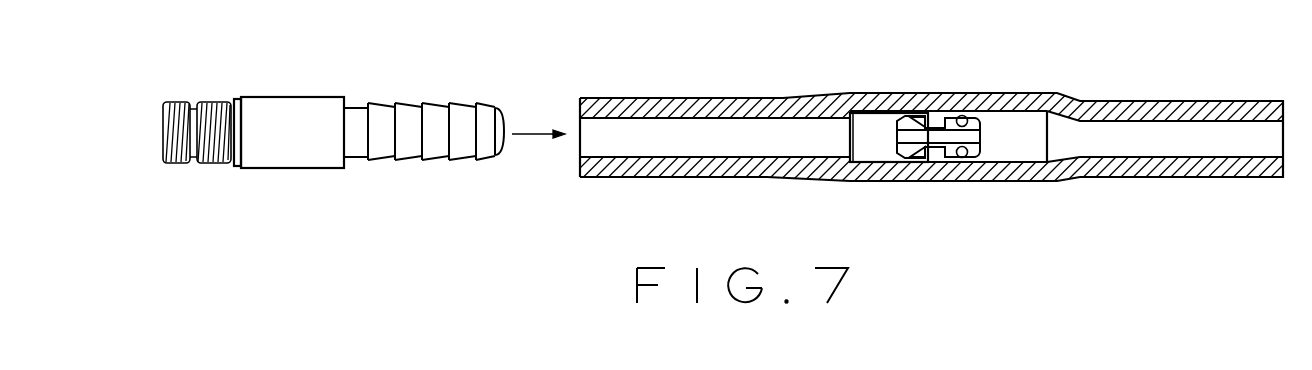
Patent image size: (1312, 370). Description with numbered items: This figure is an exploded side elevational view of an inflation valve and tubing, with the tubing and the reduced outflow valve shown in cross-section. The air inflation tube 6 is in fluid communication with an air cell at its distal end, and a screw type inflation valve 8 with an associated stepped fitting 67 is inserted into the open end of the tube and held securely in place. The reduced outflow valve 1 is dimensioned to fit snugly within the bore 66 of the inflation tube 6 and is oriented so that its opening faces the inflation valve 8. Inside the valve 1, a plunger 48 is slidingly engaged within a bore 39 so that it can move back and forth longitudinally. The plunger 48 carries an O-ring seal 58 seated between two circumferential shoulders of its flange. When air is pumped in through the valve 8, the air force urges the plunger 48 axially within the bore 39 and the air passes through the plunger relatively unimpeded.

The screw type valve 8 is at (226, 90).
The stepped fitting 67 is at (408, 120).
The bore of inflation tube 66 is at (738, 136).
The air inflation tube 6 is at (1096, 167).
The bore 39 is at (870, 128).
The reduced outflow valve 1 is at (886, 163).
The plunger 48 is at (967, 118).
The O-ring seal 58 is at (965, 158).